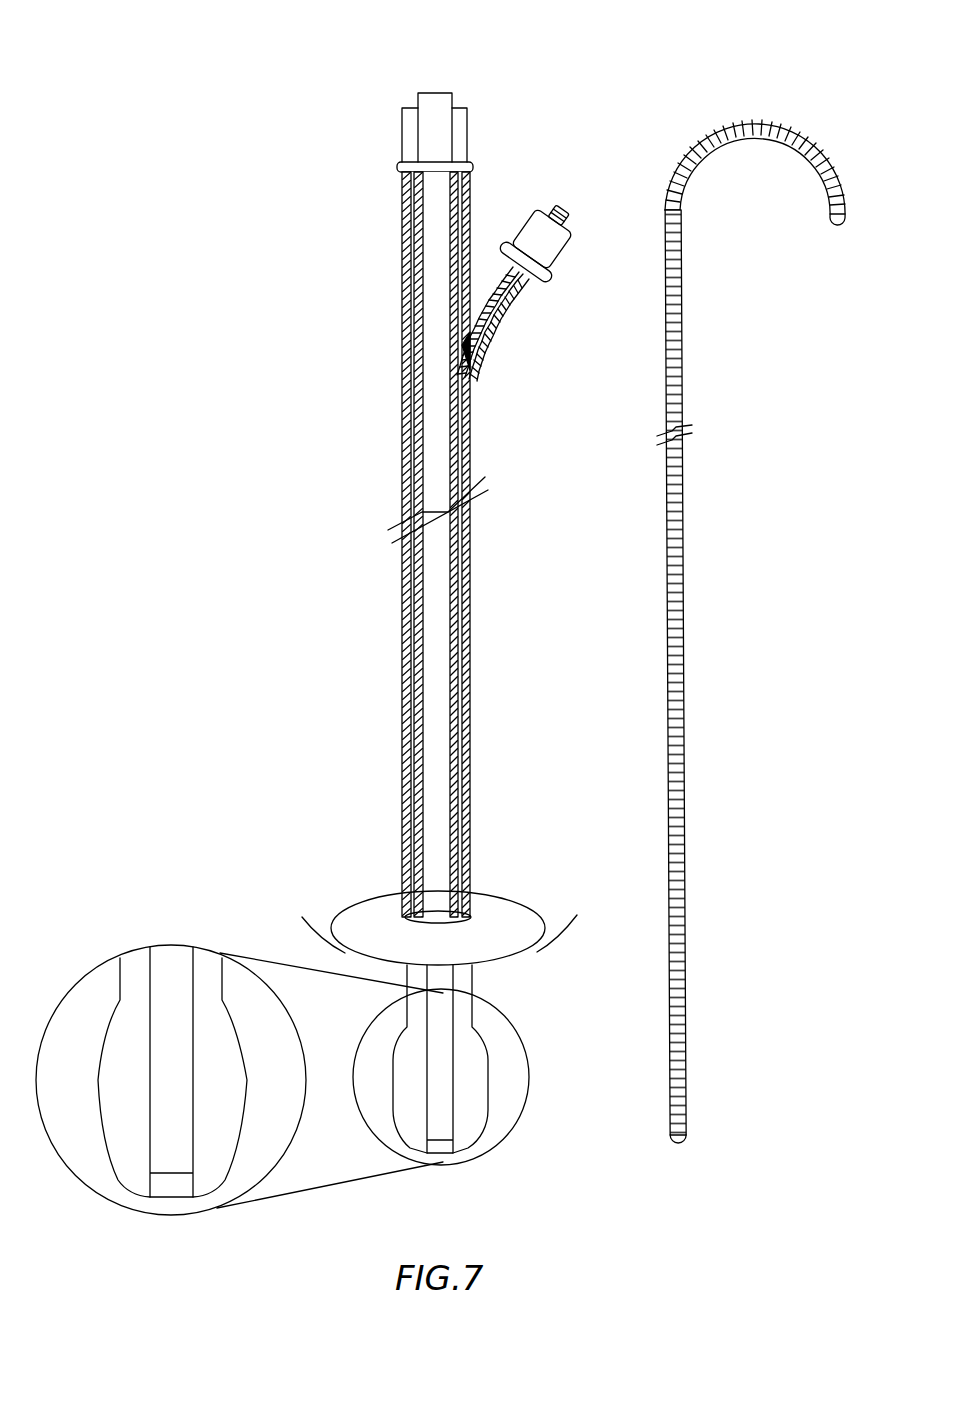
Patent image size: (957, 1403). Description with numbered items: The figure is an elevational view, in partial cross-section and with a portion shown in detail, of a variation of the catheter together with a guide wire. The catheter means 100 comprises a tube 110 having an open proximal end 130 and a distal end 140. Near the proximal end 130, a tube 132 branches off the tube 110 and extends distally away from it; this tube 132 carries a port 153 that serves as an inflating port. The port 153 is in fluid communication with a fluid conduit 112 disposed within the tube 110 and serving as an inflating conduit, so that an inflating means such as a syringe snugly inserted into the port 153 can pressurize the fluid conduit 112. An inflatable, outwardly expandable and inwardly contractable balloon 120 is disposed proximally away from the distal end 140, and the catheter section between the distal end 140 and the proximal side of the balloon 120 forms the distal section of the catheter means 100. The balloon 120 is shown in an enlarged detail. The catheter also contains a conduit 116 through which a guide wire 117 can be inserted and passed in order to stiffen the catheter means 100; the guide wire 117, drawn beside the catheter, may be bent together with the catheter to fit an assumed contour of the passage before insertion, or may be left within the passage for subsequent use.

The catheter means 100 is at (292, 116).
The tube 110 is at (482, 637).
The fluid conduit 112 is at (470, 433).
The conduit 116 is at (435, 484).
The guide wire 117 is at (690, 147).
The balloon 120 is at (503, 908).
The proximal end 130 is at (427, 93).
The tube 132 is at (498, 317).
The distal end 140 is at (457, 1148).
The port 153 is at (562, 208).